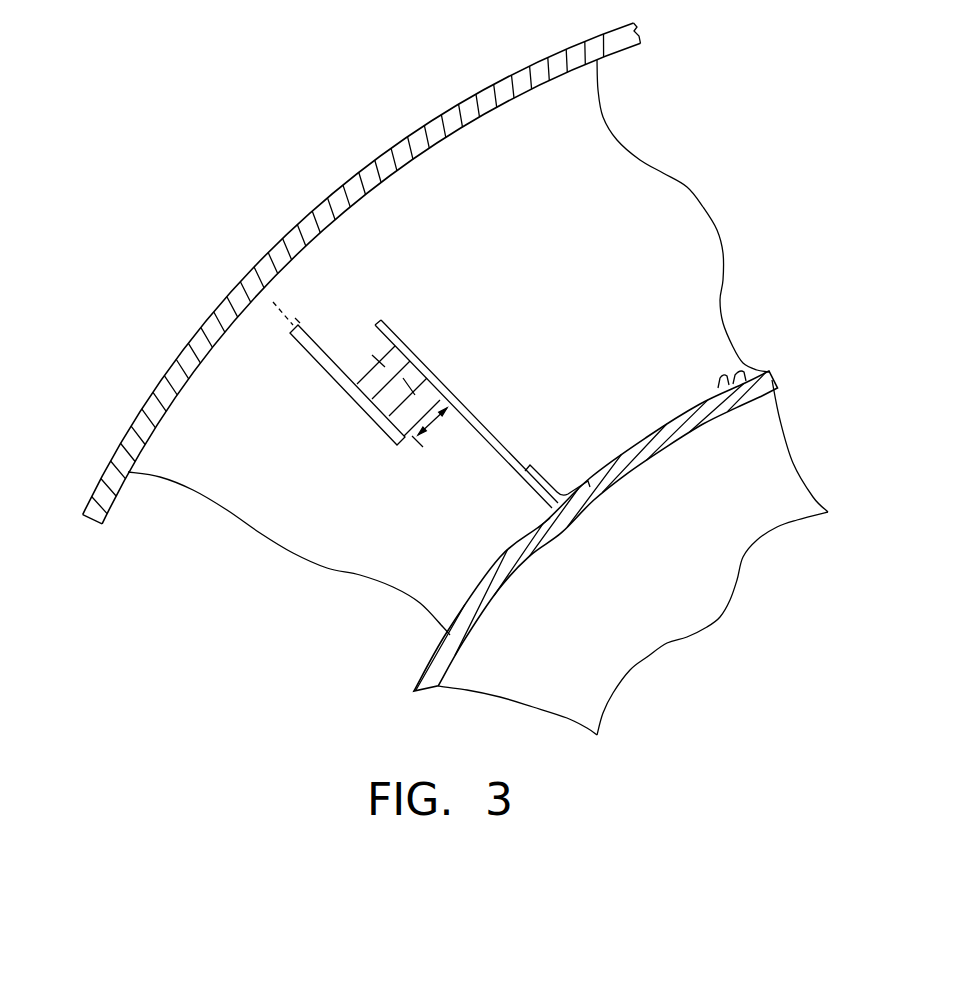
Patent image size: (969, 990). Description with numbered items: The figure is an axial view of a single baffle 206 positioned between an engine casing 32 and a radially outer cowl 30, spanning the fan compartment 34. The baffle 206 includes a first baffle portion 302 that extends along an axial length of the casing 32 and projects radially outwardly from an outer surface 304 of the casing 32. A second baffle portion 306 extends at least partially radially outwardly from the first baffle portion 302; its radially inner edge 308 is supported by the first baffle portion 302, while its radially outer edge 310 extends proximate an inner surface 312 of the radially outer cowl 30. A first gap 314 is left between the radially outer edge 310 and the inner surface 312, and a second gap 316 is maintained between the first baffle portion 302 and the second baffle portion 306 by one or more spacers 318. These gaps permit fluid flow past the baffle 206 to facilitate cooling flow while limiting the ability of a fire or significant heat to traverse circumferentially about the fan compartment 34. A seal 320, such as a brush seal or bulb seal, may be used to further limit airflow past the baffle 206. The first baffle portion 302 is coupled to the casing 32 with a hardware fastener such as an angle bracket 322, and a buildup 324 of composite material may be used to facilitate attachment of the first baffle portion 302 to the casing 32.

The radially outer cowl 30 is at (233, 282).
The casing 32 is at (700, 403).
The fan compartment 34 is at (337, 506).
The baffle 206 is at (497, 373).
The first baffle portion 302 is at (418, 367).
The outer surface 304 is at (540, 527).
The second baffle portion 306 is at (337, 383).
The radially inner edge 308 is at (400, 444).
The radially outer edge 310 is at (337, 378).
The inner surface 312 is at (423, 157).
The first gap 314 is at (290, 288).
The second gap 316 is at (435, 422).
The spacers 318 is at (415, 397).
The seal 320 is at (273, 302).
The angle bracket 322 is at (550, 478).
The buildup 324 is at (748, 352).